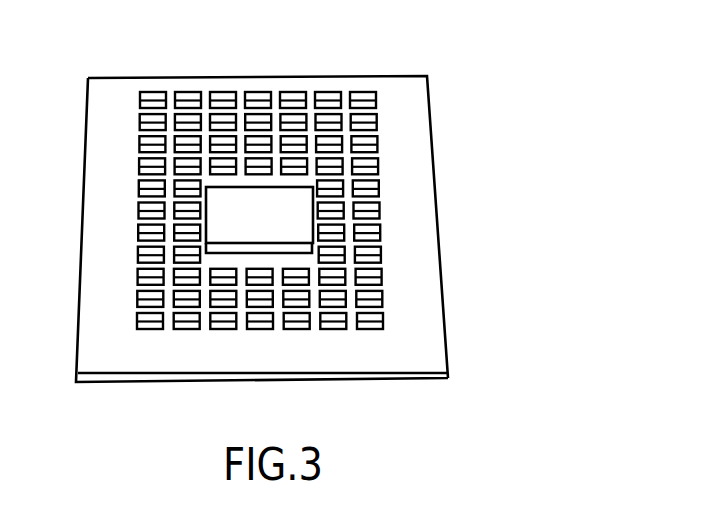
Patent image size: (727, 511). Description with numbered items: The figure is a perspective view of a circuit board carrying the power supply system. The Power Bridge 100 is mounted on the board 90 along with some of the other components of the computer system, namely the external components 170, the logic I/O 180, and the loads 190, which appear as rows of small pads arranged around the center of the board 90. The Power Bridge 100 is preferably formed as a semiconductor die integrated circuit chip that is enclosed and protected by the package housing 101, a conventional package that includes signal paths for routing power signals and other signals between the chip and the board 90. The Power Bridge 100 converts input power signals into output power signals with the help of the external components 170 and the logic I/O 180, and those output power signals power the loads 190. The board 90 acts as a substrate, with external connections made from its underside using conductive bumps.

The board 90 is at (445, 311).
The Power Bridge 100 is at (225, 190).
The package housing 101 is at (286, 250).
The external components 170 is at (288, 32).
The logic I/O 180 is at (316, 48).
The loads 190 is at (341, 48).